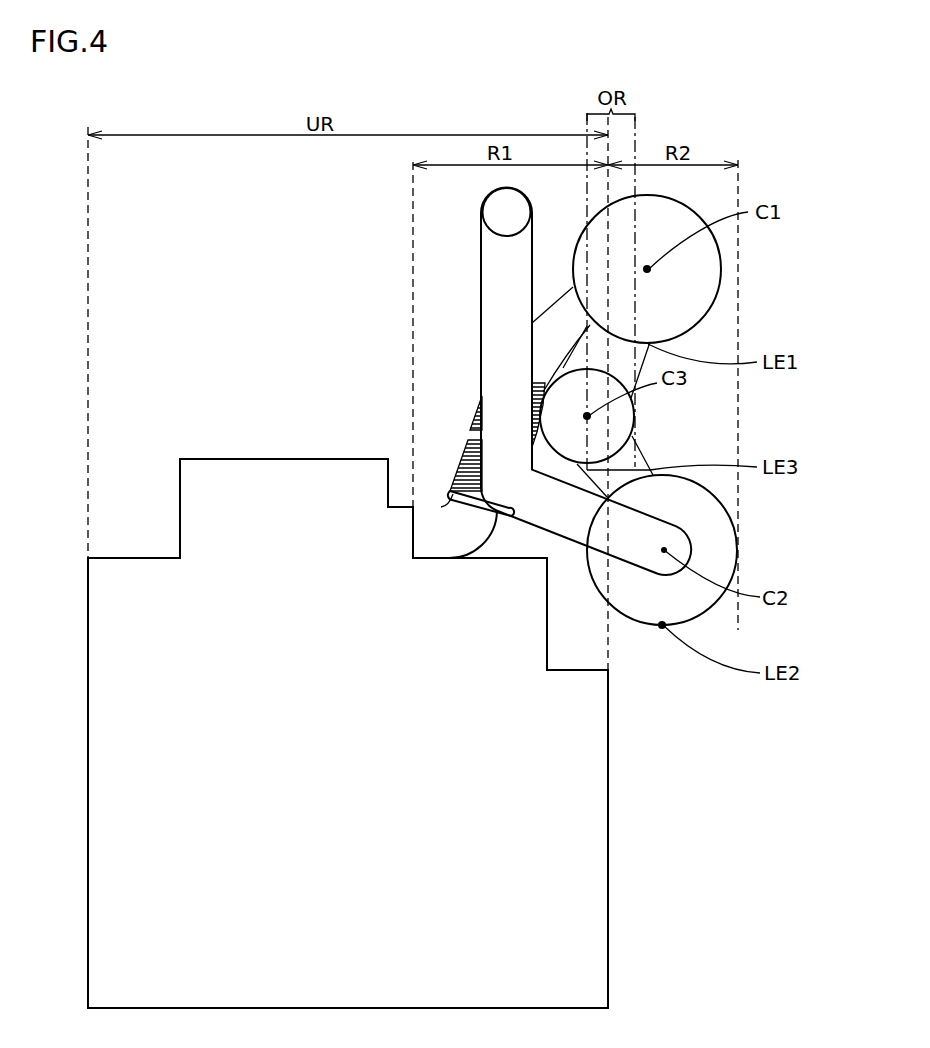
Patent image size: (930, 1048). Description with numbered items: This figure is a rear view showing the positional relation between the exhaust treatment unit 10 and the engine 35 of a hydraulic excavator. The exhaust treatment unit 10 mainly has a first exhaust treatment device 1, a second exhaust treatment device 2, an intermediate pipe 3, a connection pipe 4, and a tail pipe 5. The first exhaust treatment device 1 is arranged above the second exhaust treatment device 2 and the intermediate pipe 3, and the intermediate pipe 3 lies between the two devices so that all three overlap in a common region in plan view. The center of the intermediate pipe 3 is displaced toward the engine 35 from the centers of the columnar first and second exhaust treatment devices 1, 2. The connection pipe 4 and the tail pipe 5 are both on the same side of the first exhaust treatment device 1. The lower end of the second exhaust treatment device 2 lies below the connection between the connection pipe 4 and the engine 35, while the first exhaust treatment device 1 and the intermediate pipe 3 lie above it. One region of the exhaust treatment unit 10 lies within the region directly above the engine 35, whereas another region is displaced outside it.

The first exhaust treatment device 1 is at (697, 270).
The second exhaust treatment device 2 is at (715, 552).
The intermediate pipe 3 is at (612, 418).
The connection pipe 4 is at (553, 327).
The tail pipe 5 is at (500, 282).
The exhaust treatment unit 10 is at (692, 99).
The engine 35 is at (338, 482).